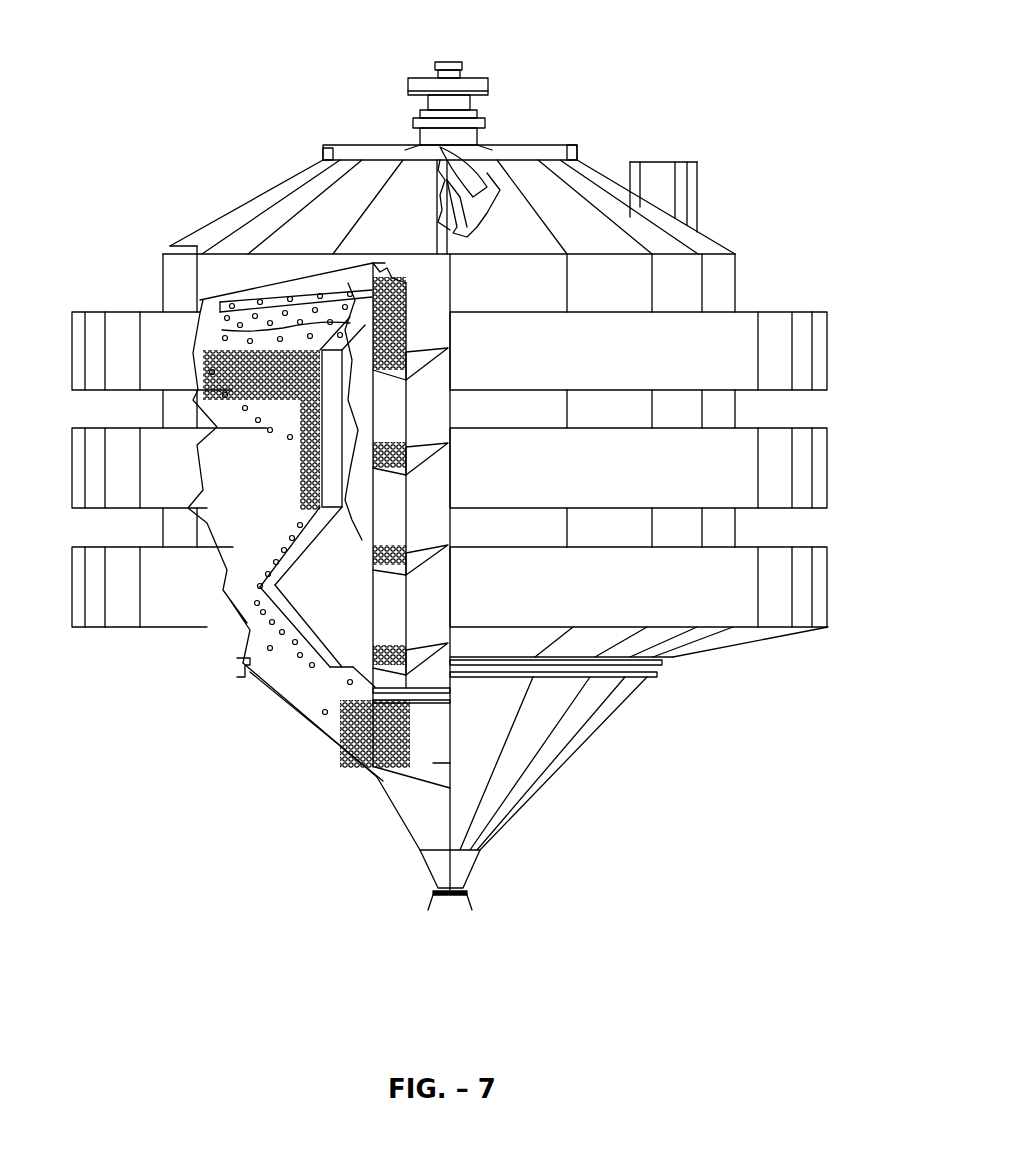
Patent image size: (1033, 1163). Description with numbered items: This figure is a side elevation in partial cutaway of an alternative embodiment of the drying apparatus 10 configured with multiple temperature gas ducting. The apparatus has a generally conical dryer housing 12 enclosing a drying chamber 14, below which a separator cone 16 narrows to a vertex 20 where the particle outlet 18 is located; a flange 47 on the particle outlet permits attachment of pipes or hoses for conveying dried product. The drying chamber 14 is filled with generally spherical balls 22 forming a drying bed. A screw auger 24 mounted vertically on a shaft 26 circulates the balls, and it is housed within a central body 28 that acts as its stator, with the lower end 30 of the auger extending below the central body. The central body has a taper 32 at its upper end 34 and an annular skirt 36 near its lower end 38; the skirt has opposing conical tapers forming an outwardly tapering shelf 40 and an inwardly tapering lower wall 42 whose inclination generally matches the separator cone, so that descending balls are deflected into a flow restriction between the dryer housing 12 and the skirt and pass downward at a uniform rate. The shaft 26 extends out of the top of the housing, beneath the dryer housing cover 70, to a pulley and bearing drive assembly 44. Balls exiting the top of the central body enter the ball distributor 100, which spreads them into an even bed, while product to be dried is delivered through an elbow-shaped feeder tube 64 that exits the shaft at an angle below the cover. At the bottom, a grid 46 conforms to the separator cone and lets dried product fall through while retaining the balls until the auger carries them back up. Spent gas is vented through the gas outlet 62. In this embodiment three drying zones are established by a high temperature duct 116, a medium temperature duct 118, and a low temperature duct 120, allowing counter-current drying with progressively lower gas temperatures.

The drying apparatus 10 is at (152, 52).
The dryer housing 12 is at (736, 272).
The drying chamber 14 is at (240, 412).
The separator cone 16 is at (572, 755).
The particle outlet 18 is at (450, 912).
The vertex 20 is at (470, 868).
The balls 22 is at (212, 338).
The screw auger 24 is at (425, 440).
The shaft 26 is at (445, 215).
The central body 28 is at (333, 478).
The lower end of screw auger 30 is at (432, 712).
The taper 32 is at (230, 318).
The upper end of central body 34 is at (377, 248).
The annular skirt 36 is at (683, 638).
The lower end of central body 38 is at (326, 670).
The outwardly tapering shelf 40 is at (300, 545).
The inwardly tapering lower wall 42 is at (305, 640).
The pulley and bearing drive assembly 44 is at (510, 66).
The grid 46 is at (327, 727).
The flange 47 is at (433, 897).
The gas outlet 62 is at (671, 161).
The feeder tube 64 is at (482, 182).
The dryer housing cover 70 is at (325, 148).
The ball distributor 100 is at (290, 290).
The high temperature duct 116 is at (828, 313).
The medium temperature duct 118 is at (828, 462).
The low temperature duct 120 is at (828, 598).